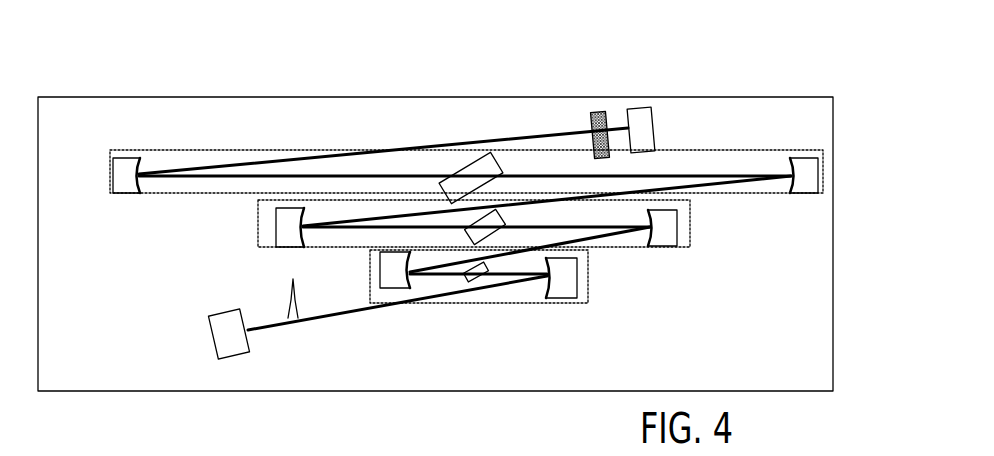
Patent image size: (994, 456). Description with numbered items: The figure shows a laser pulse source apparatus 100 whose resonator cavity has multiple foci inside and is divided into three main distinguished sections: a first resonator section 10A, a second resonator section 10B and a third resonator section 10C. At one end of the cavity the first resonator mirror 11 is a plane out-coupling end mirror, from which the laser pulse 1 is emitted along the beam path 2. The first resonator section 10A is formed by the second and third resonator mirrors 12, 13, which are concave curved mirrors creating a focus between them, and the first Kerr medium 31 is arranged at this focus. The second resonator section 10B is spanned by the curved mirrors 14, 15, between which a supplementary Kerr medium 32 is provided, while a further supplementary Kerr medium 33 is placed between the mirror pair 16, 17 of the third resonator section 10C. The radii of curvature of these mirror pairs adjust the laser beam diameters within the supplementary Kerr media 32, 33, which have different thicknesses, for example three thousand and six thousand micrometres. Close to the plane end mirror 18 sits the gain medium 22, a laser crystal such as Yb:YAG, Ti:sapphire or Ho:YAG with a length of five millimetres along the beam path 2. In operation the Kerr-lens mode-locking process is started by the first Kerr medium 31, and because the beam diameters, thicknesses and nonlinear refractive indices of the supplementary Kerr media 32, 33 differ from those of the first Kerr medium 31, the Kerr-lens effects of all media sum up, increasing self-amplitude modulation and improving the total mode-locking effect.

The laser pulse source apparatus 100 is at (128, 77).
The laser pulse 1 is at (296, 294).
The beam path 2 is at (348, 315).
The first resonator mirror 11 is at (227, 325).
The second resonator mirror 12 is at (560, 285).
The third resonator mirror 13 is at (393, 257).
The curved mirror 14 is at (667, 235).
The curved mirror 15 is at (288, 237).
The curved mirror 16 is at (797, 165).
The curved mirror 17 is at (133, 167).
The plane end mirror 18 is at (640, 117).
The gain medium 22 is at (597, 108).
The first Kerr medium 31 is at (482, 287).
The supplementary Kerr medium 32 is at (482, 223).
The supplementary Kerr medium 33 is at (477, 172).
The first resonator section 10A is at (674, 251).
The second resonator section 10B is at (702, 203).
The third resonator section 10C is at (110, 148).